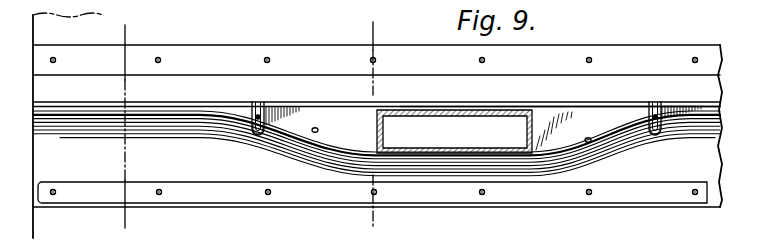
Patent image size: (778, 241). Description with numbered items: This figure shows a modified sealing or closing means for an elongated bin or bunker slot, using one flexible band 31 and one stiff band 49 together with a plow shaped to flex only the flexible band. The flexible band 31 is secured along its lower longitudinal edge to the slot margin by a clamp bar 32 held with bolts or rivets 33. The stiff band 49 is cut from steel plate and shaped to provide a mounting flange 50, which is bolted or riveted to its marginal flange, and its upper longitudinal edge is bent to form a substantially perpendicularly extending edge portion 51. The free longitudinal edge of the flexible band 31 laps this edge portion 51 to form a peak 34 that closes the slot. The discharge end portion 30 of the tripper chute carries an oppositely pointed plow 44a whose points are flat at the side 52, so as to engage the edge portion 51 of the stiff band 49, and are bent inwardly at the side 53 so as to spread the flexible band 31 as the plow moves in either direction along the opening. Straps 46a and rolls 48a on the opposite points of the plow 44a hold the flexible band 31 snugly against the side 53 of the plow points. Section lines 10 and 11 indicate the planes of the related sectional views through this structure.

The section line 10- 10 is at (110, 33).
The section line 11- 11 is at (352, 31).
The discharge end portion of the tripper chute 30 is at (485, 126).
The flexible band 31 is at (204, 167).
The clamp bar 32 is at (330, 193).
The bolts or rivets 33 is at (266, 196).
The peak 34 is at (95, 107).
The plow 44a is at (343, 123).
The straps 46a is at (258, 110).
The rolls 48a is at (258, 139).
The stiff band 49 is at (95, 87).
The mounting flange 50 is at (295, 53).
The perpendicularly extending edge portion 51 is at (208, 95).
The flat side of the plow 52 is at (582, 113).
The inwardly bent side of the plow 53 is at (316, 132).